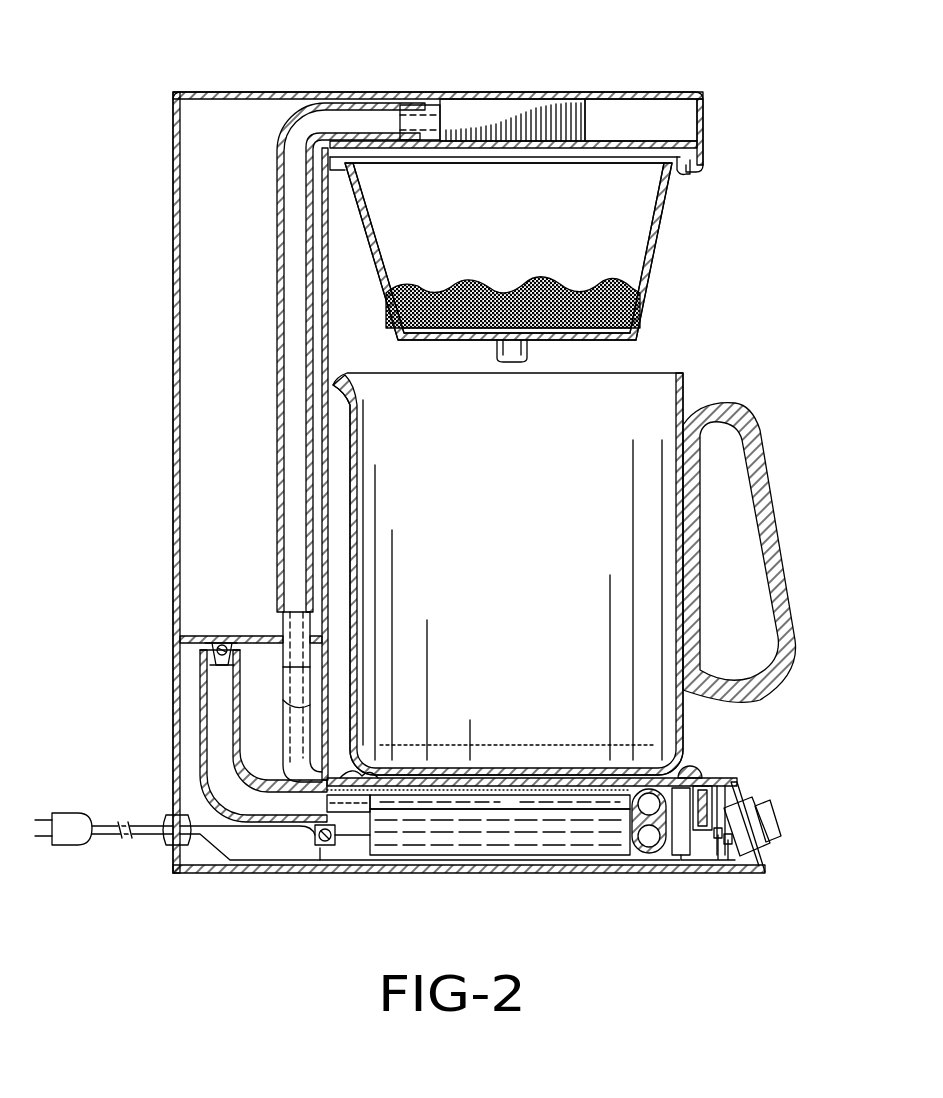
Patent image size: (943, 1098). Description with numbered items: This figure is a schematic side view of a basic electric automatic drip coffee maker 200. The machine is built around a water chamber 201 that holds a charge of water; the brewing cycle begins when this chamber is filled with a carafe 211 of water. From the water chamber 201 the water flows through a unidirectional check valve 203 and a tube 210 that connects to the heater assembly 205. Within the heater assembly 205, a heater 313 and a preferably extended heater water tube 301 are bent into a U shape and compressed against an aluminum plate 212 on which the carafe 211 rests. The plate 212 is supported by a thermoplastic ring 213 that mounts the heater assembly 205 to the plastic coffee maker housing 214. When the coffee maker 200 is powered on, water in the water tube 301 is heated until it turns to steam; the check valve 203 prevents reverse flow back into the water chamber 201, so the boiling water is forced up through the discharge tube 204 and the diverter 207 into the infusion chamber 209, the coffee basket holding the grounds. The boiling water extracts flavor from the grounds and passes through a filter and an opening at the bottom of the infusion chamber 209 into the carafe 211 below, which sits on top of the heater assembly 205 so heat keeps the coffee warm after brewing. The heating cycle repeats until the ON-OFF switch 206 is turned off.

The automatic drip coffee maker 200 is at (714, 298).
The water chamber 201 is at (252, 304).
The unidirectional check valve 203 is at (207, 672).
The discharge tube 204 is at (295, 511).
The heater assembly 205 is at (580, 830).
The ON-OFF switch 206 is at (758, 808).
The diverter 207 is at (530, 105).
The infusion chamber 209 is at (533, 236).
The tube 210 is at (200, 740).
The carafe 211 is at (535, 479).
The aluminum plate 212 is at (686, 776).
The thermoplastic ring 213 is at (356, 777).
The coffee maker housing 214 is at (766, 860).
The heater water tube 301 is at (485, 806).
The heater 313 is at (421, 835).